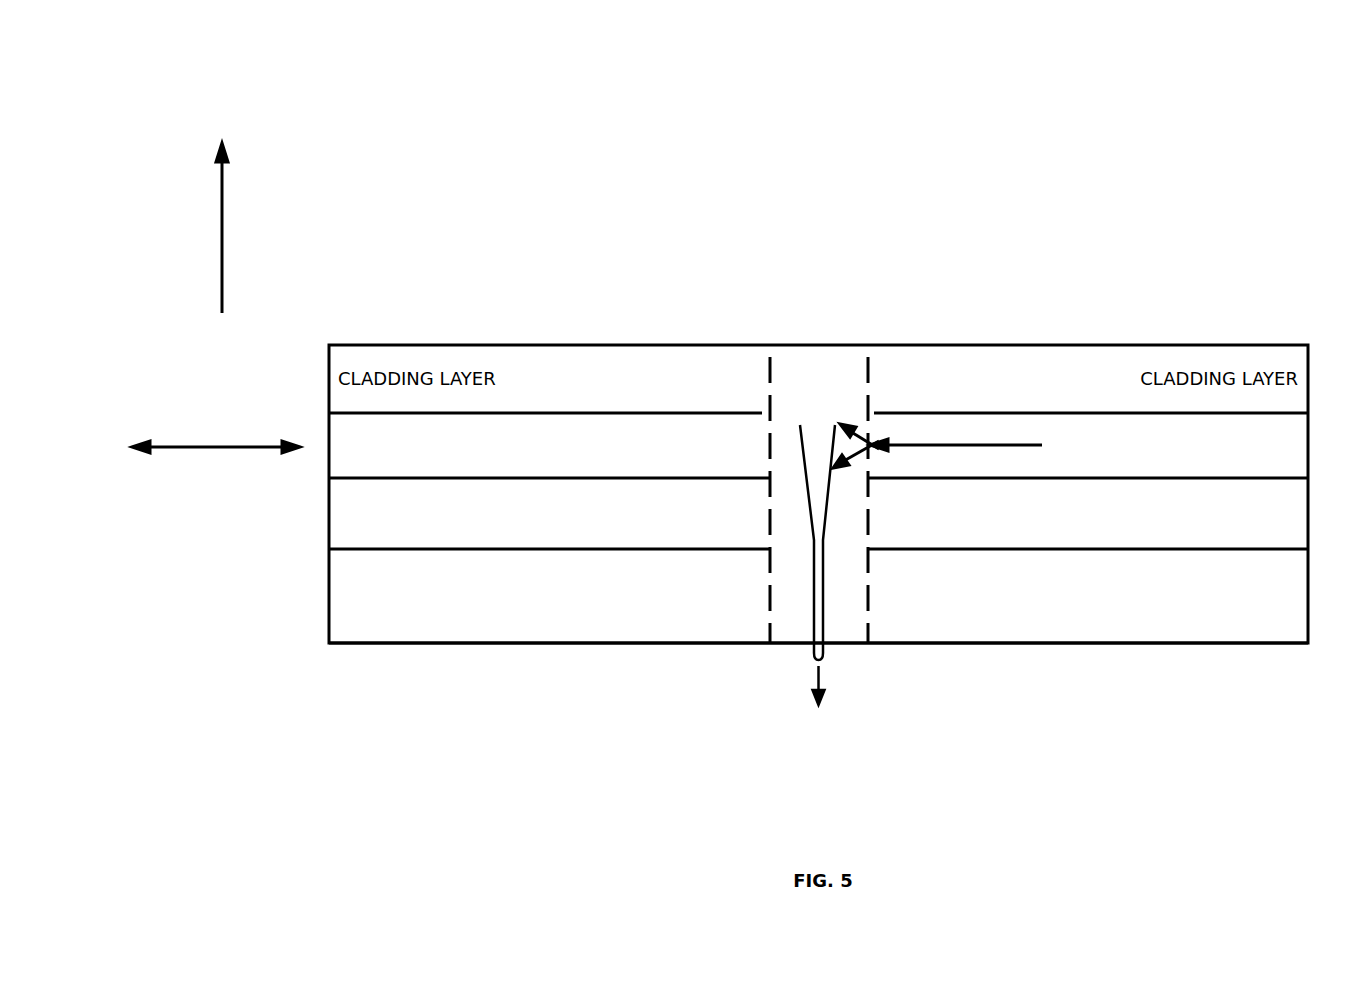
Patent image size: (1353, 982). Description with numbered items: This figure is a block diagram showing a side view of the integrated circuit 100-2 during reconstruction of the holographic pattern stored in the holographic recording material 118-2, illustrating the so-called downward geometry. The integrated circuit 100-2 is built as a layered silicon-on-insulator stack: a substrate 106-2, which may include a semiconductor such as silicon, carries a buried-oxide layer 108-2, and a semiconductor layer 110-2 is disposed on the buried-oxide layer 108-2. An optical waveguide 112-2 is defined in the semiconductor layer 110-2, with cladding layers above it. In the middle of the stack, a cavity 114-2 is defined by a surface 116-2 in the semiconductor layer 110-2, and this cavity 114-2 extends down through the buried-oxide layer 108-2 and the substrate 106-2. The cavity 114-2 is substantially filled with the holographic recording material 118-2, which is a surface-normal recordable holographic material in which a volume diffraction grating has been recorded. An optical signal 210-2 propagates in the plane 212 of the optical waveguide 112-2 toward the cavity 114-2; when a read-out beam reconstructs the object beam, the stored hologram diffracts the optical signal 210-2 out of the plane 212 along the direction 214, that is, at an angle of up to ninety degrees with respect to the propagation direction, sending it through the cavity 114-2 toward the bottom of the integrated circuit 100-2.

The integrated circuit 100-2 is at (1095, 103).
The substrate 106-2 is at (1115, 619).
The buried-oxide layer 108-2 is at (1115, 539).
The semiconductor layer 110-2 is at (577, 437).
The optical waveguide 112-2 is at (1298, 469).
The cavity 114-2 is at (845, 556).
The surface 116-2 is at (768, 518).
The holographic recording material 118-2 is at (785, 597).
The optical signal 210-2 is at (913, 443).
The plane 212 is at (224, 447).
The direction 214 is at (222, 196).